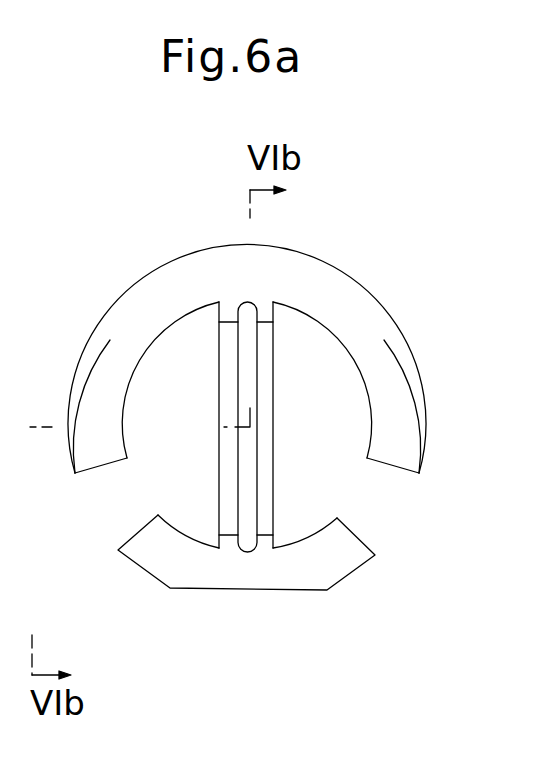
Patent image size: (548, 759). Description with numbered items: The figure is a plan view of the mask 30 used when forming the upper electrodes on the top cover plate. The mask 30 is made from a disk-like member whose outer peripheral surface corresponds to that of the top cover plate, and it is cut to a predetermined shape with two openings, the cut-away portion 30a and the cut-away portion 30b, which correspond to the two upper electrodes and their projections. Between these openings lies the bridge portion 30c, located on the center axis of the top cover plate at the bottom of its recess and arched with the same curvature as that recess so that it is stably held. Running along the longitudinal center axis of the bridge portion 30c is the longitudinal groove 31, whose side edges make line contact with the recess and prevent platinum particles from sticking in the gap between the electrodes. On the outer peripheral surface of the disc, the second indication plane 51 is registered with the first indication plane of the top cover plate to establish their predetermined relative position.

The mask 30 is at (110, 312).
The cut-away portion 30a is at (185, 477).
The cut-away portion 30b is at (323, 478).
The bridge portion 30c is at (273, 452).
The longitudinal groove 31 is at (240, 361).
The second indication plane 51 is at (190, 590).